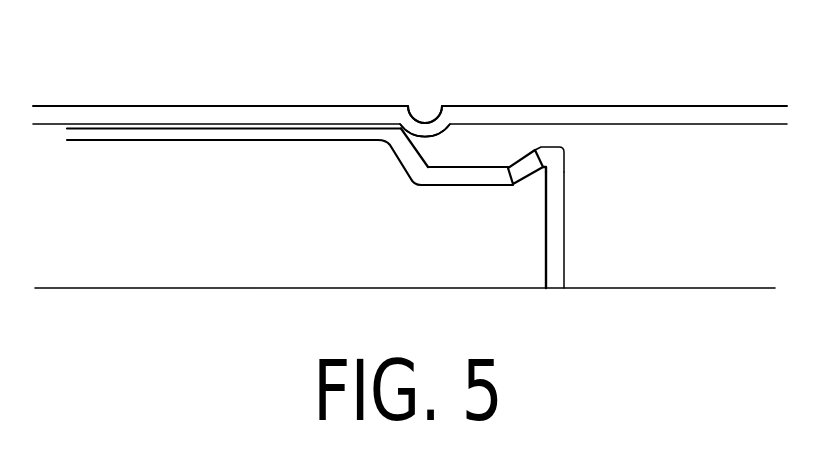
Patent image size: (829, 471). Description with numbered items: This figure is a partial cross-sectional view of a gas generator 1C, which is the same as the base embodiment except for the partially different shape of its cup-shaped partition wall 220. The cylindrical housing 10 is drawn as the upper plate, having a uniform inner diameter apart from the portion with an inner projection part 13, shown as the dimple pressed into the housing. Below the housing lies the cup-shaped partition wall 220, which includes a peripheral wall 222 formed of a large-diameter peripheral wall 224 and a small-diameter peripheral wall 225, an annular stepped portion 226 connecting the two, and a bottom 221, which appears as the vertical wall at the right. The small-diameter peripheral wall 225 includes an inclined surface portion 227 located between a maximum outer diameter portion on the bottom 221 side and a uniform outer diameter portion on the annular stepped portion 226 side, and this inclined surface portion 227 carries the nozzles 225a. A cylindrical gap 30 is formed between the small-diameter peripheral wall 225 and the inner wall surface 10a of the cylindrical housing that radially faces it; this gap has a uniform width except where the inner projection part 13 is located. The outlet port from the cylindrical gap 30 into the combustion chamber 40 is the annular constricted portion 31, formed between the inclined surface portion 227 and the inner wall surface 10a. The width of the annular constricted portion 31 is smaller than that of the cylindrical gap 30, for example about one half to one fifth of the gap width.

The gas generator 1C is at (276, 86).
The cylindrical housing 10 is at (646, 106).
The inner wall surface of the cylindrical housing 10a is at (704, 125).
The inner projection part 13 is at (443, 149).
The cylindrical gap 30 is at (497, 149).
The annular constricted portion 31 is at (552, 137).
The combustion chamber 40 is at (748, 239).
The cup-shaped partition wall 220 is at (375, 157).
The bottom 221 is at (564, 256).
The peripheral wall 222 is at (234, 185).
The large-diameter peripheral wall 224 is at (321, 141).
The small-diameter peripheral wall 225 is at (452, 186).
The nozzles 225a is at (530, 177).
The annular stepped portion 226 is at (416, 148).
The inclined surface portion 227 is at (542, 146).